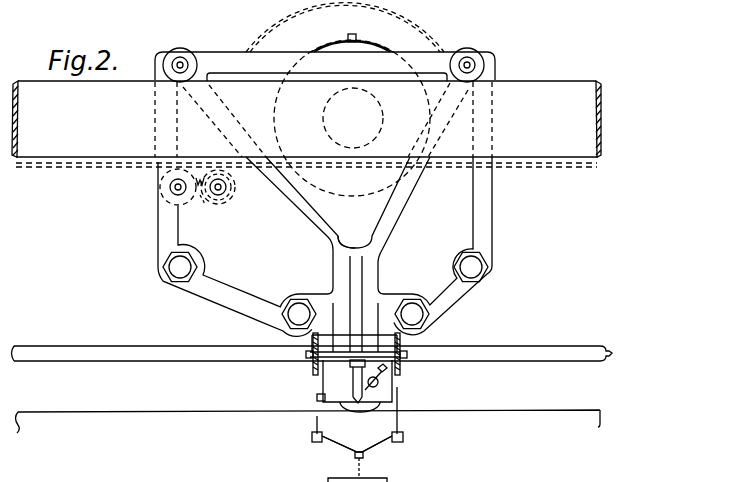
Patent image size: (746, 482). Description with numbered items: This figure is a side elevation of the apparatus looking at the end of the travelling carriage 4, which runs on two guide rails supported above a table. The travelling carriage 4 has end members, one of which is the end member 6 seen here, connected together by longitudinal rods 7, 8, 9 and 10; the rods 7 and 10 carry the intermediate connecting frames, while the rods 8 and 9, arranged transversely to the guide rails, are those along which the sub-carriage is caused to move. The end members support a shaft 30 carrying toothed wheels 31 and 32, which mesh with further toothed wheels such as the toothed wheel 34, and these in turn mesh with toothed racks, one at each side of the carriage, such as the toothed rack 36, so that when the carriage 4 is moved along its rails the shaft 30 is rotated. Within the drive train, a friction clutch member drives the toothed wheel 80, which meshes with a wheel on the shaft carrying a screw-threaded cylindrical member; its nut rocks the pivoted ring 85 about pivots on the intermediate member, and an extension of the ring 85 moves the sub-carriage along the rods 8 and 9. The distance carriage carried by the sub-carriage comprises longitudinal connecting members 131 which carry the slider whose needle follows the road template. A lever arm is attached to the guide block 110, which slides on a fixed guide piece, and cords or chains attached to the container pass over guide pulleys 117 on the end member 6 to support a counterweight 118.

The travelling carriage 4 is at (302, 256).
The end member 6 is at (383, 238).
The longitudinal rod 7 is at (168, 258).
The longitudinal rod 8 is at (292, 316).
The longitudinal rod 9 is at (407, 310).
The longitudinal rod 10 is at (463, 258).
The shaft 30 is at (231, 194).
The toothed wheel 31 is at (245, 212).
The toothed wheel 32 is at (236, 206).
The toothed wheel 34 is at (167, 178).
The toothed rack 36 is at (306, 140).
The toothed wheel 80 is at (300, 47).
The pivoted ring 85 is at (360, 42).
The guide block 110 is at (393, 418).
The guide pulley 117 is at (312, 374).
The counterweight 118 is at (379, 421).
The longitudinal connecting member 131 is at (107, 356).